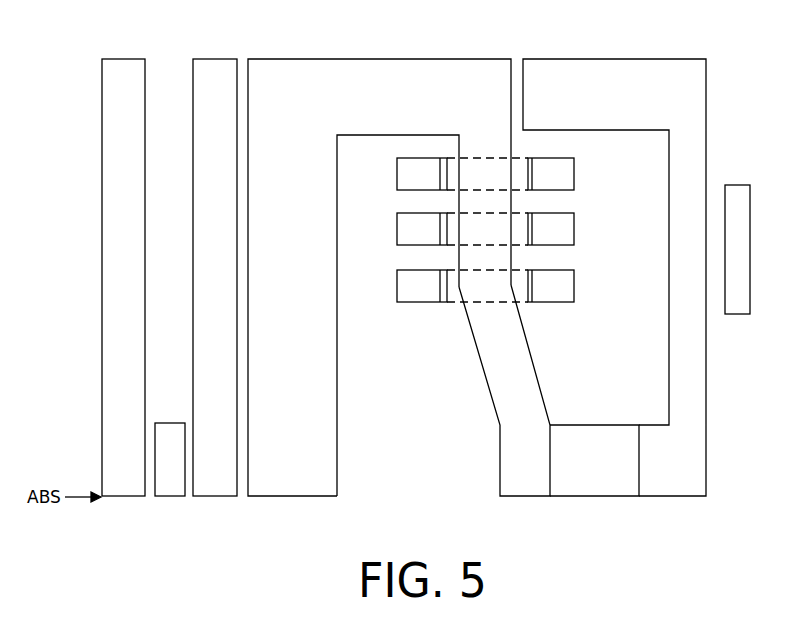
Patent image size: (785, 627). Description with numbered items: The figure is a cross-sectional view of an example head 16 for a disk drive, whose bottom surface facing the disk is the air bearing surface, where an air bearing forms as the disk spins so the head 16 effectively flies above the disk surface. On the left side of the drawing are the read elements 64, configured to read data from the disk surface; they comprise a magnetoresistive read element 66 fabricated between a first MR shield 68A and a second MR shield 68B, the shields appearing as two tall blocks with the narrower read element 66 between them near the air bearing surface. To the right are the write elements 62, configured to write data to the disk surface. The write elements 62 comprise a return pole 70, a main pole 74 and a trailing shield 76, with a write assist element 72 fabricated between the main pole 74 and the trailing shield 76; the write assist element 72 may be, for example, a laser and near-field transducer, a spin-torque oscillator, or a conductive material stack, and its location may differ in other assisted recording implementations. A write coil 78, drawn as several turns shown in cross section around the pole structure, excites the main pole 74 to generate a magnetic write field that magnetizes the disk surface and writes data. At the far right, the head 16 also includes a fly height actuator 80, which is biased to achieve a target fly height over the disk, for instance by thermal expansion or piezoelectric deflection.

The head 16 is at (70, 104).
The write elements 62 is at (710, 51).
The read elements 64 is at (239, 51).
The magnetoresistive (MR) read element 66 is at (170, 497).
The MR shield 68A is at (124, 497).
The MR shield 68B is at (215, 497).
The return pole 70 is at (295, 498).
The write assist element 72 is at (595, 497).
The main pole 74 is at (523, 497).
The trailing shield 76 is at (674, 497).
The write coil 78 is at (418, 305).
The fly height actuator (FHA) 80 is at (737, 316).